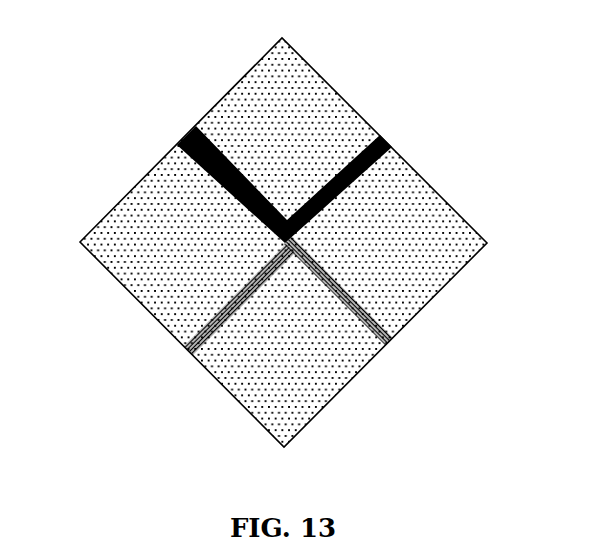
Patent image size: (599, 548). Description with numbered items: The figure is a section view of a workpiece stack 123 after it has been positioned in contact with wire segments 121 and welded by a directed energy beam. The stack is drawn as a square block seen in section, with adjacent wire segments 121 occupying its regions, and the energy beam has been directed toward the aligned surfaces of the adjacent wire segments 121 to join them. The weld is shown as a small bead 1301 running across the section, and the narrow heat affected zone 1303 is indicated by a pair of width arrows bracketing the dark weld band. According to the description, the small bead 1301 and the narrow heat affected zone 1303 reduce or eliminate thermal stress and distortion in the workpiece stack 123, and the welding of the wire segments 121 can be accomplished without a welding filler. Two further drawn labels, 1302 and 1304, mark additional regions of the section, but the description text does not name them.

The workpiece stack 123 is at (290, 239).
The wire segment 121 is at (125, 218).
The small bead 1301 is at (399, 125).
The second conductive trace 1302 is at (333, 373).
The narrow heat affected zone 1303 is at (192, 208).
The substrate region 1304 is at (430, 208).